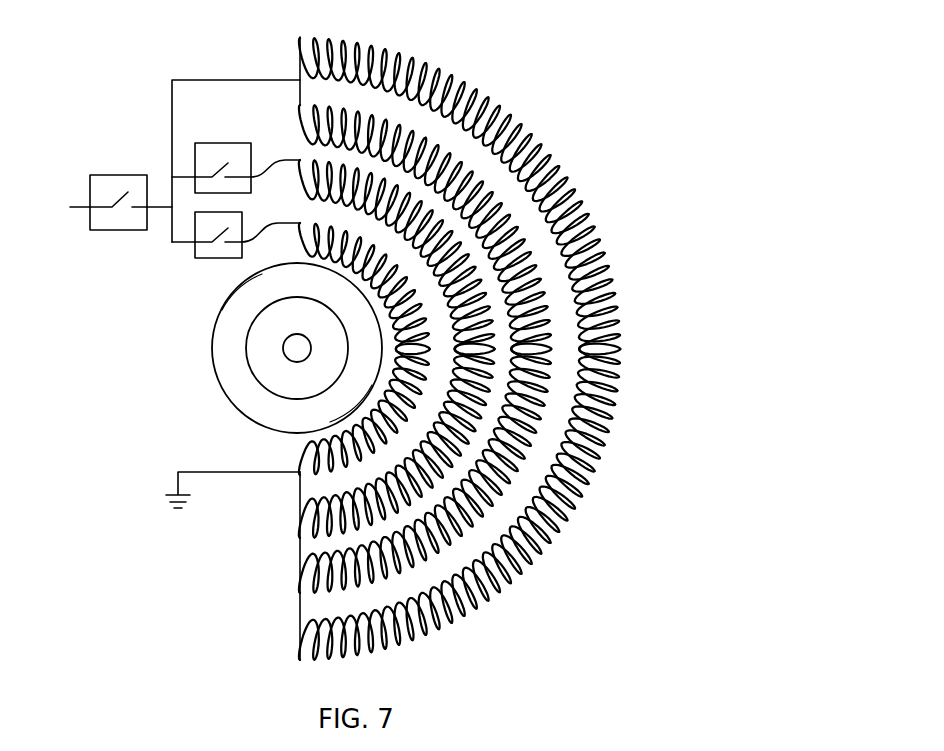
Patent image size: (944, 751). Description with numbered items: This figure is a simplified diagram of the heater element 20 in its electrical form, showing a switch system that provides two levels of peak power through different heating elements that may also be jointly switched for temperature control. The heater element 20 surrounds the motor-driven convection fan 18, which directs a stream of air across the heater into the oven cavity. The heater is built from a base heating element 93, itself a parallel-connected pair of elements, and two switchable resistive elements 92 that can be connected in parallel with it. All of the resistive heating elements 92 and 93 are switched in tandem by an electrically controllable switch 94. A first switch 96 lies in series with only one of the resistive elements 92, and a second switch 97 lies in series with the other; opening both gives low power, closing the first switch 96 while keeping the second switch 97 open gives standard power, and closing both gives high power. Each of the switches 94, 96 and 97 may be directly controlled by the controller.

The heater element 20 is at (525, 65).
The switchable resistive elements 92 is at (405, 325).
The base heating element 93 is at (497, 477).
The convection fan 18 is at (233, 383).
The electrically controllable switch 94 is at (110, 230).
The first switch 96 is at (212, 143).
The second switch 97 is at (195, 258).